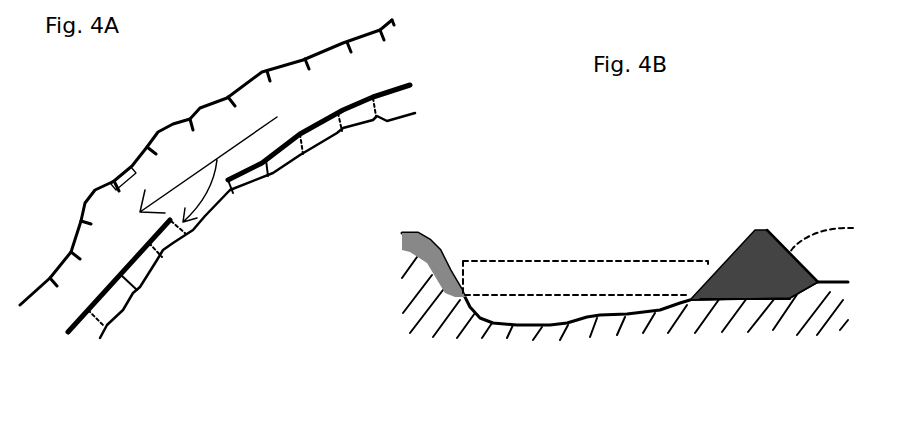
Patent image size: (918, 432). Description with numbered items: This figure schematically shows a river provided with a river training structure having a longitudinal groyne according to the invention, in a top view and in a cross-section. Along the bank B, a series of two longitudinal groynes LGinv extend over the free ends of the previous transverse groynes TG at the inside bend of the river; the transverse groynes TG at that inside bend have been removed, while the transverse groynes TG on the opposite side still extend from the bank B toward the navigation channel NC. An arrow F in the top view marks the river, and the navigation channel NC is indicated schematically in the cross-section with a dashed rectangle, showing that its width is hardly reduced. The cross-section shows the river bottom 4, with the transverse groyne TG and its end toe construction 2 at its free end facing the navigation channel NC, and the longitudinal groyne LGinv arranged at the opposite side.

In FIG. 4A, the bank B is at (217, 179).
In FIG. 4A, the longitudinal groyne LGinv is at (418, 62).
In FIG. 4B, the longitudinal groyne LGinv is at (745, 257).
In FIG. 4A, the transverse groyne TG is at (127, 165).
In FIG. 4B, the transverse groyne TG is at (611, 262).
In FIG. 4A, the flow direction of adatoms F is at (192, 172).
In FIG. 4B, the navigation channel NC is at (585, 278).
In FIG. 4B, the bottom 4 is at (573, 333).
In FIG. 4B, the end toe construction 2 is at (760, 300).